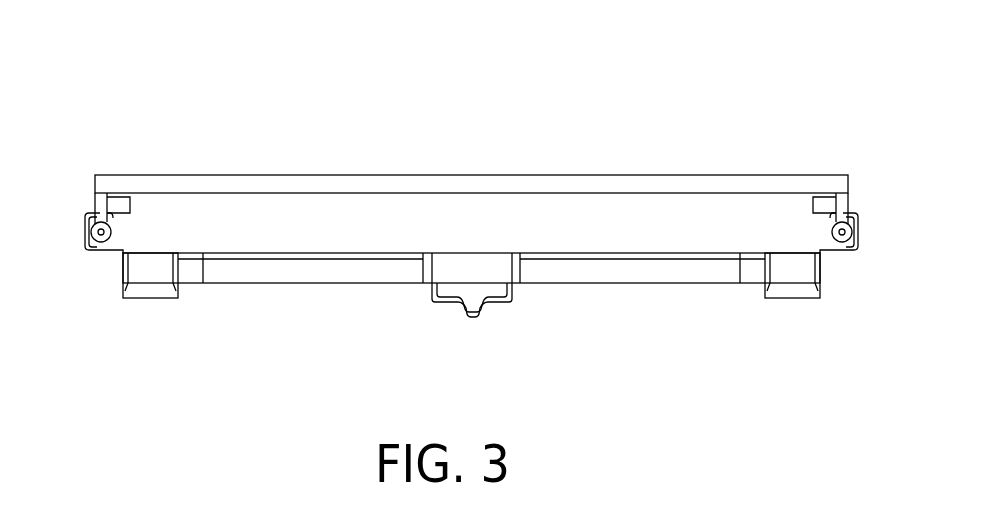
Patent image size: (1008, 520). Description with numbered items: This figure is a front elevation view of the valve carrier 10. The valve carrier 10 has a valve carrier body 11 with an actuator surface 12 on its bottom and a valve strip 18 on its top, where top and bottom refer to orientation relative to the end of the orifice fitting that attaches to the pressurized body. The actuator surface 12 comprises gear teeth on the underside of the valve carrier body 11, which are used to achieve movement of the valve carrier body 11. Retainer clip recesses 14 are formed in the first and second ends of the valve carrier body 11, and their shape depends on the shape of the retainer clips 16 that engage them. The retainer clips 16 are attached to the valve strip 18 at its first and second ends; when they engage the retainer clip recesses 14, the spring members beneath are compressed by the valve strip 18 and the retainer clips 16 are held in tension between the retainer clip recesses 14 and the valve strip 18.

The valve carrier 10 is at (260, 123).
The valve carrier body 11 is at (598, 268).
The actuator surface 12 is at (153, 293).
The retainer clip recess 14 is at (106, 240).
The retainer clip 16 is at (101, 188).
The valve strip 18 is at (486, 176).